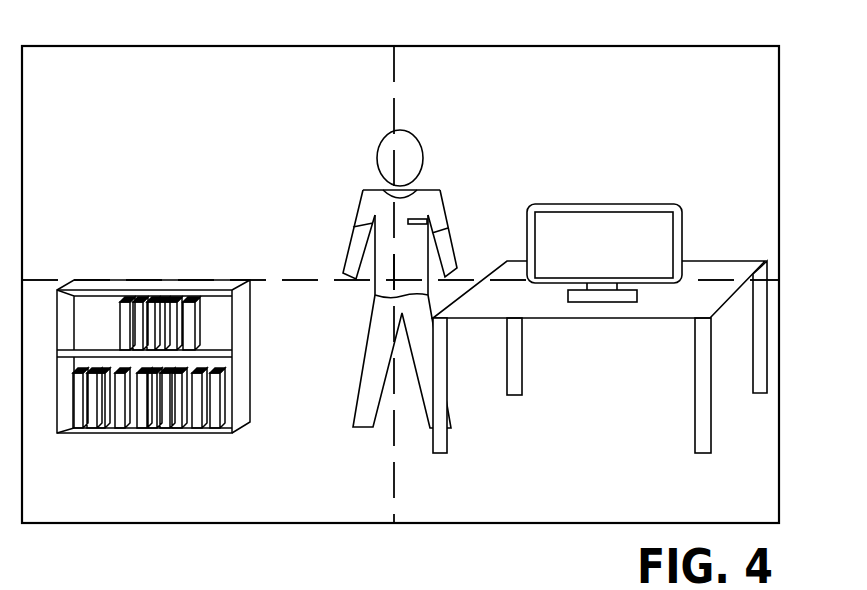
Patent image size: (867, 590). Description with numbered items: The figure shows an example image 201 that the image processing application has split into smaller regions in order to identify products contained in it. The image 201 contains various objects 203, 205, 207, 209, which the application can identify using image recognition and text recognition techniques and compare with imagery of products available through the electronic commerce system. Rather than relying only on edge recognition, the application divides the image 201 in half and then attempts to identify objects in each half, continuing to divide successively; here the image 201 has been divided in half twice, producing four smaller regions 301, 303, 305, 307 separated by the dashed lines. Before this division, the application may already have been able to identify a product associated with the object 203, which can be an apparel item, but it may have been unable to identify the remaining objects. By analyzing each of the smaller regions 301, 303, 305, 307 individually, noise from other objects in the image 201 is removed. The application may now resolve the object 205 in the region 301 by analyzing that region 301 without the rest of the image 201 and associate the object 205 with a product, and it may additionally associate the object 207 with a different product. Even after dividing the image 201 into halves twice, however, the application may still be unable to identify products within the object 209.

The image 201 is at (600, 46).
The object 203 is at (435, 187).
The object 205 is at (577, 203).
The object 207 is at (685, 257).
The object 209 is at (180, 280).
The region 301 is at (472, 70).
The region 303 is at (508, 499).
The region 305 is at (146, 499).
The region 307 is at (149, 78).